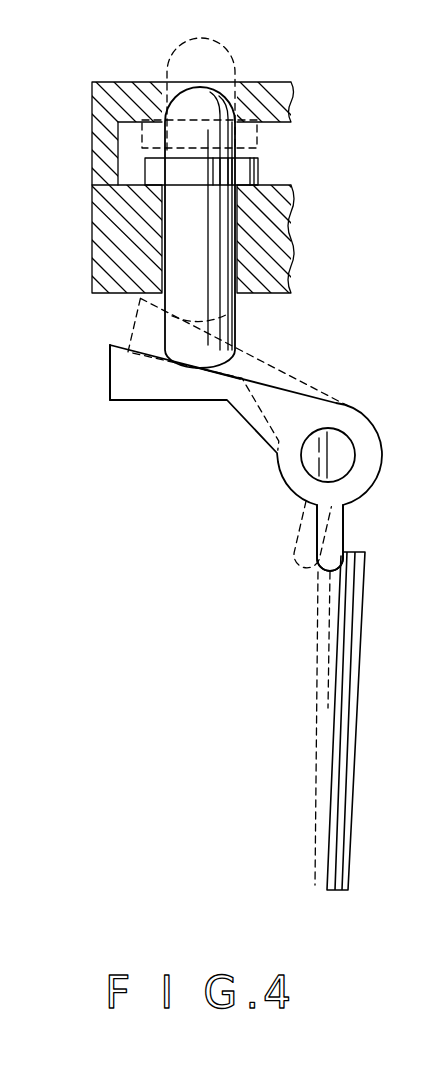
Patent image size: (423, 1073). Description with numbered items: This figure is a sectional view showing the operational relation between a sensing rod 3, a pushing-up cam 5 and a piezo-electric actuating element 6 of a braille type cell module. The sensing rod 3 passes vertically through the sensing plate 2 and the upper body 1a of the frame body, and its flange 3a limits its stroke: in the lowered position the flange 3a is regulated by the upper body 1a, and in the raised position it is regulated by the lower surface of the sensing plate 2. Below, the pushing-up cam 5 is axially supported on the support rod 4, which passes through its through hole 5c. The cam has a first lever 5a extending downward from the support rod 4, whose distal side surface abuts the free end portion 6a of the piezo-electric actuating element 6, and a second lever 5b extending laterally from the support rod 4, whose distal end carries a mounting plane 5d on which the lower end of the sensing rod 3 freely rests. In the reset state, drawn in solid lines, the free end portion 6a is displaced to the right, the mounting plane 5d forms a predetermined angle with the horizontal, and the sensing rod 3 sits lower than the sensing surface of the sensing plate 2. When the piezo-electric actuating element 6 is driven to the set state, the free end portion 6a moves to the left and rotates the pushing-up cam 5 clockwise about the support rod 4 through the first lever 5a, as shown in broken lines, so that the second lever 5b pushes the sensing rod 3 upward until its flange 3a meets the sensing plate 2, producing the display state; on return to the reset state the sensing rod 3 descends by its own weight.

The upper body 1a is at (95, 248).
The sensing plate 2 is at (92, 108).
The sensing rod 3 is at (191, 94).
The flange 3a is at (145, 171).
The support rod 4 is at (340, 468).
The pushing-up cam 5 is at (370, 428).
The first lever 5a is at (344, 536).
The second lever 5b is at (112, 377).
The through hole 5c is at (298, 468).
The mounting plane 5d is at (232, 373).
The piezo-electric actuating element 6 is at (358, 696).
The free end portion 6a is at (335, 588).